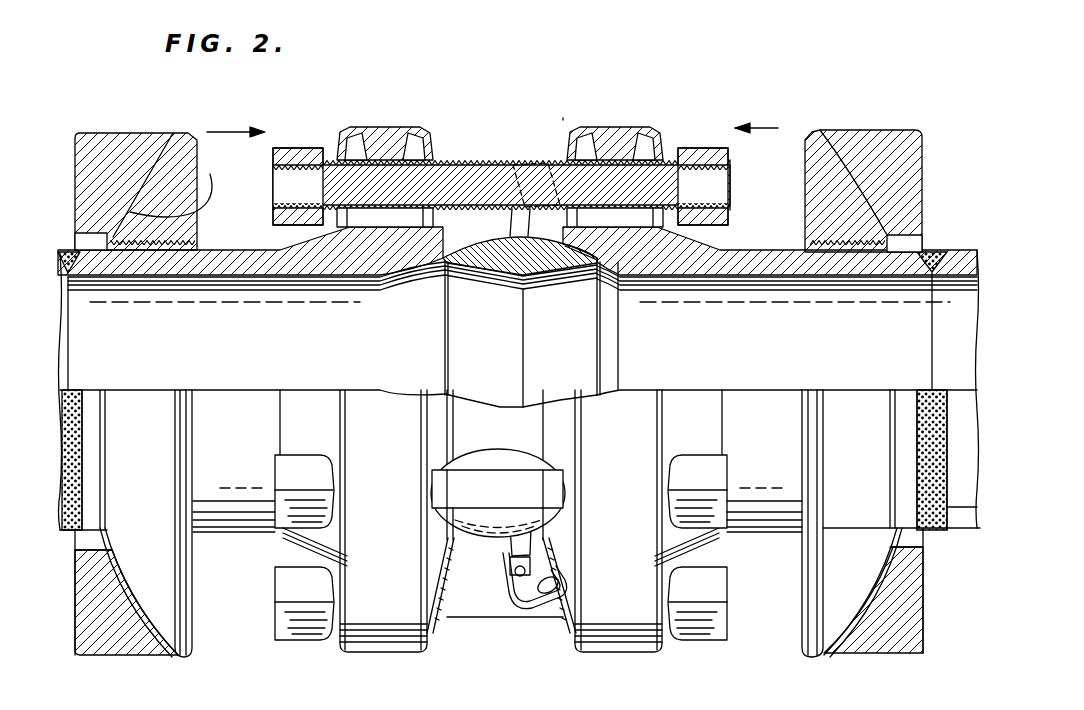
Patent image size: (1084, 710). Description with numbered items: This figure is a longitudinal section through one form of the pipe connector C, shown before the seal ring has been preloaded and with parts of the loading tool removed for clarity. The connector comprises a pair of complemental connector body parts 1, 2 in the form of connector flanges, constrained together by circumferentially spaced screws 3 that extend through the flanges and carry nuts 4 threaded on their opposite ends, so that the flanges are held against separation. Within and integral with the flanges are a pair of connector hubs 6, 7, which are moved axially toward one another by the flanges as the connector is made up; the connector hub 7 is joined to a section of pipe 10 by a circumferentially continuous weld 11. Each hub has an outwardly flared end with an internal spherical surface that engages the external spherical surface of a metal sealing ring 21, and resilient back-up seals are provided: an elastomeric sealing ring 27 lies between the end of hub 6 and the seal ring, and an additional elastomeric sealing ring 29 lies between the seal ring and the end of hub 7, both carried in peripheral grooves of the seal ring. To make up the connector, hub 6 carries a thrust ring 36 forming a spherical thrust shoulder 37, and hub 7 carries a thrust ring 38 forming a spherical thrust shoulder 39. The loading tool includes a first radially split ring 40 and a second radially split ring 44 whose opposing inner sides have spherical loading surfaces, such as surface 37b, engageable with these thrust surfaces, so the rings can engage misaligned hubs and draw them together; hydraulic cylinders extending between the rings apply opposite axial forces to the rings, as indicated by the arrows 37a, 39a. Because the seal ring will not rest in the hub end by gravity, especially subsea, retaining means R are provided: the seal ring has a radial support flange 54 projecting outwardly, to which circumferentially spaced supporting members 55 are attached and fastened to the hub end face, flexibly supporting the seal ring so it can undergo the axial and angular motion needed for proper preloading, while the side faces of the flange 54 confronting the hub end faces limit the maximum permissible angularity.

The connector body part 1 is at (399, 121).
The connector body part 2 is at (629, 121).
The screw 3 is at (462, 170).
The nut 4 is at (290, 148).
The connector hub 6 is at (268, 263).
The connector hub 7 is at (747, 263).
The pipe 10 is at (962, 528).
The weld 11 is at (933, 531).
The metal sealing ring 21 is at (543, 257).
The elastomeric sealing ring 27 is at (463, 263).
The elastomeric sealing ring 29 is at (582, 249).
The thrust ring 36 is at (152, 526).
The thrust shoulder 37 is at (130, 194).
The arrow 37a is at (222, 132).
The spherical loading surface 37b is at (190, 183).
The thrust ring 38 is at (865, 524).
The thrust shoulder 39 is at (877, 208).
The arrow 39a is at (778, 128).
The first radially split ring 40 is at (110, 137).
The second radially split ring 44 is at (892, 132).
The radial support flange 54 is at (520, 218).
The supporting member 55 is at (503, 590).
The retaining means R is at (550, 156).
The pipe connector C is at (564, 116).